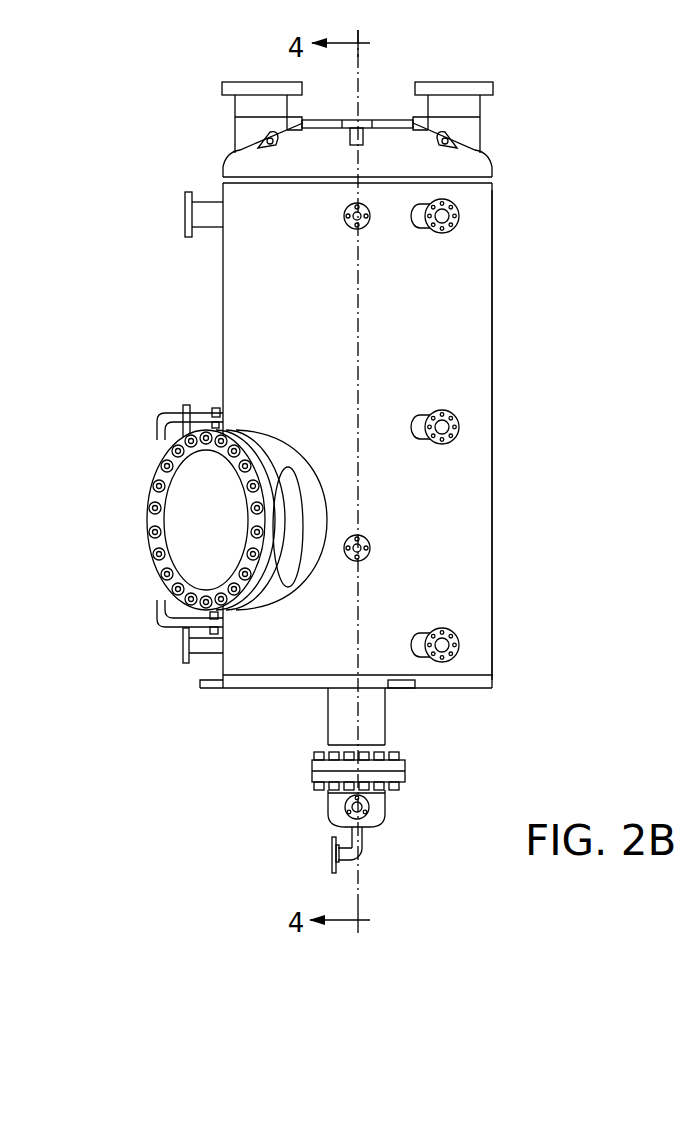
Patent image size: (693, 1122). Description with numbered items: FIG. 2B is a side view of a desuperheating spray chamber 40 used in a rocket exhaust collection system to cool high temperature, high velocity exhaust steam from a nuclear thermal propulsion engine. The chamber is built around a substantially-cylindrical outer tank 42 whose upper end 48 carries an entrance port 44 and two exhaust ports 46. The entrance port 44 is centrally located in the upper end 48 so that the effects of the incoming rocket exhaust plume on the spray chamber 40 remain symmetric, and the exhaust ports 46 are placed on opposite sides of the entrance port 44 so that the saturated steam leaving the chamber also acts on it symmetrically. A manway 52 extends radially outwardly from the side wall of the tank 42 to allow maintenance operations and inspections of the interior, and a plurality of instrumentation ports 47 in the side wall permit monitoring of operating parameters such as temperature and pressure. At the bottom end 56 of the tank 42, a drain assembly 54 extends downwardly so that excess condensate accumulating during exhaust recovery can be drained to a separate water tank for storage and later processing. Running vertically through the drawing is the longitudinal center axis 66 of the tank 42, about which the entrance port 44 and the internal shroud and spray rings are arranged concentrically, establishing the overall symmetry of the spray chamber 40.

The desuperheating spray chamber 40 is at (560, 277).
The outer tank 42 is at (503, 383).
The entrance port 44 is at (368, 108).
The exhaust ports 46 is at (252, 73).
The instrumentation ports 47 is at (175, 188).
The upper end 48 is at (500, 158).
The manway 52 is at (150, 477).
The drain assembly 54 is at (317, 805).
The bottom end 56 is at (447, 703).
The longitudinal center axis 66 is at (358, 872).